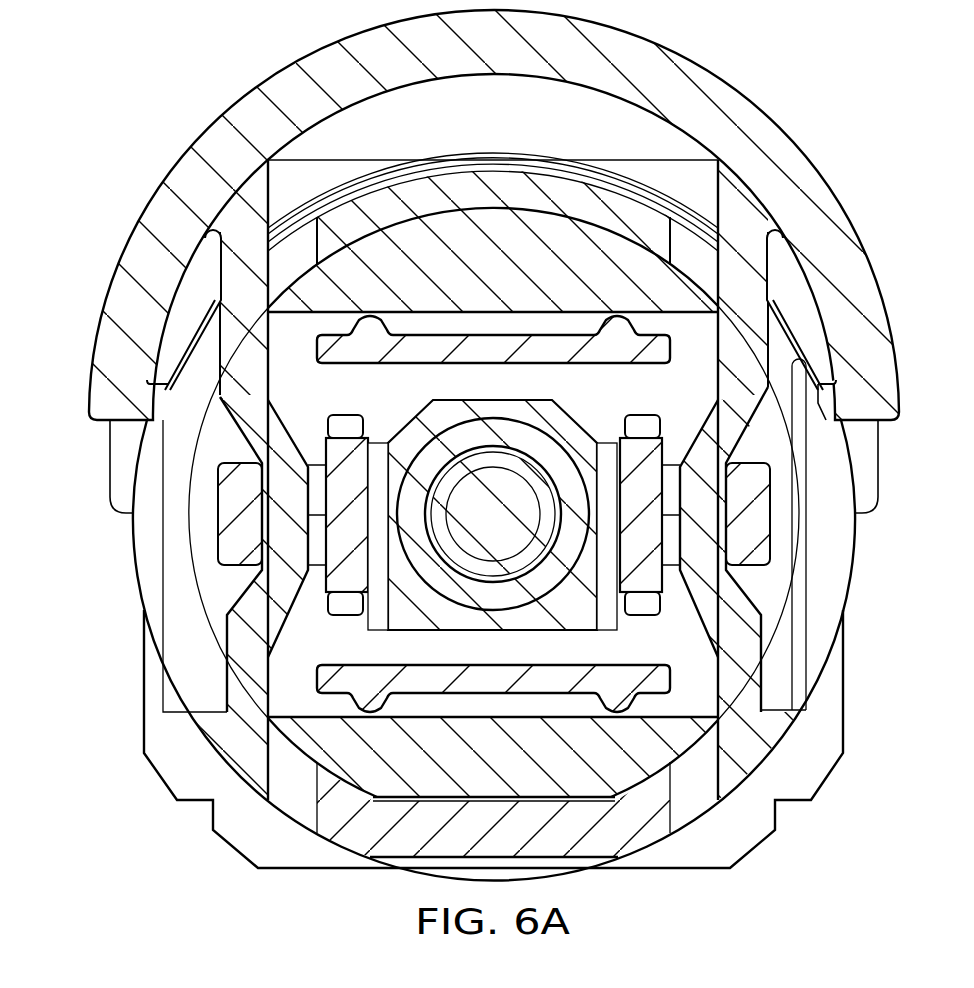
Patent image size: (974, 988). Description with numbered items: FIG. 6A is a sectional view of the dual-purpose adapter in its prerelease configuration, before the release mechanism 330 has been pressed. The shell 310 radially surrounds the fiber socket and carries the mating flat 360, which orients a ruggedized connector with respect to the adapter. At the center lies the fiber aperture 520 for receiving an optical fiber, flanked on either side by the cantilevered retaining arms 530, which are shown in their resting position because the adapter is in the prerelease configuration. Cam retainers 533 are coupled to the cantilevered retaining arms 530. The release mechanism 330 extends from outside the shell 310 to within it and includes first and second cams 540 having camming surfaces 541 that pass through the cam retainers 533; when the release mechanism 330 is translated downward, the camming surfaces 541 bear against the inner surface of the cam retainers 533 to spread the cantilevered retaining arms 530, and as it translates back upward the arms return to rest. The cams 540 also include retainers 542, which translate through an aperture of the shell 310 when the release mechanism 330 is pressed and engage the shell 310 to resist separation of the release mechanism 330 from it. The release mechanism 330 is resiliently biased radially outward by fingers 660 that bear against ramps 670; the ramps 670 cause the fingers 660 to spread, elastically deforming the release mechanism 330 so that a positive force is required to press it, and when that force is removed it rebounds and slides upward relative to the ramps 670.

The shell 310 is at (847, 557).
The release mechanism 330 is at (247, 107).
The mating flat 360 is at (365, 835).
The fiber aperture 520 is at (515, 529).
The cantilevered retaining arms 530 is at (345, 462).
The cam retainers 533 is at (230, 533).
The cams 540 is at (235, 698).
The camming surfaces 541 is at (253, 420).
The retainers 542 is at (227, 743).
The fingers 660 is at (810, 407).
The ramps 670 is at (843, 443).